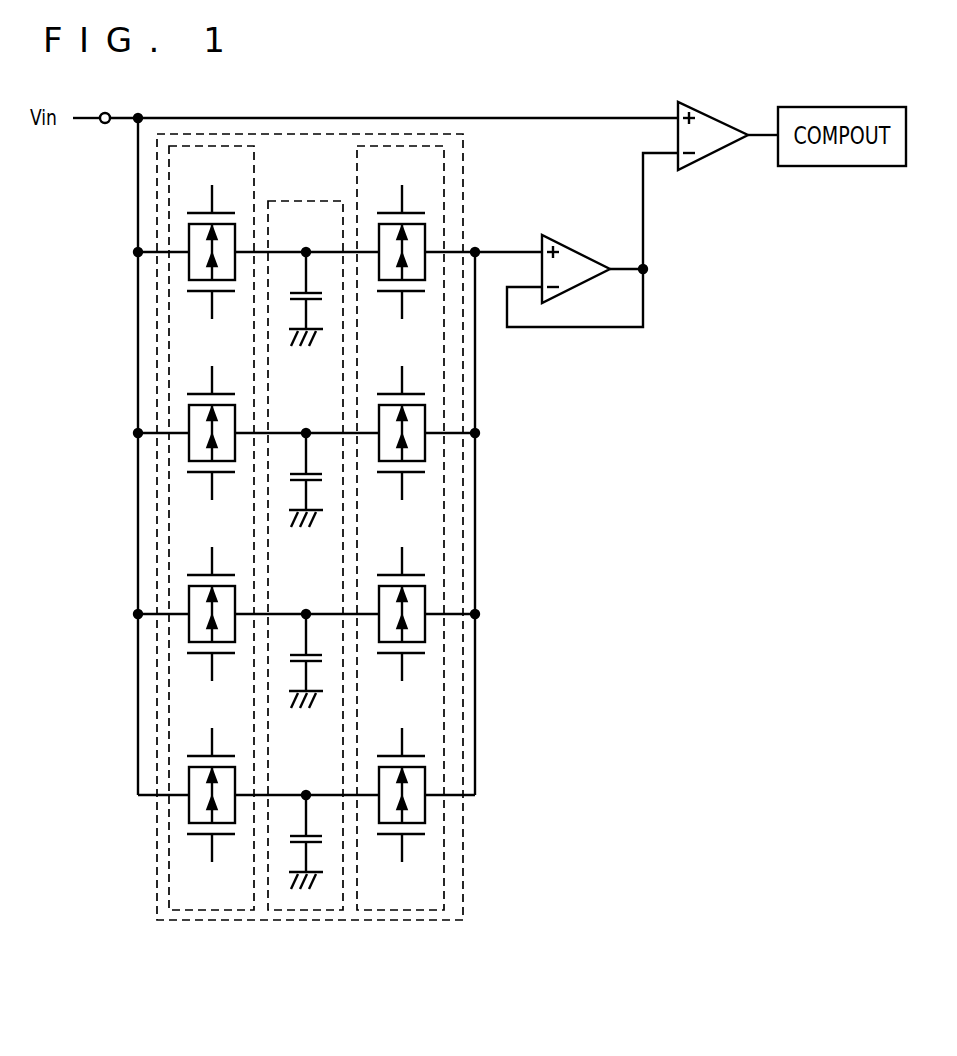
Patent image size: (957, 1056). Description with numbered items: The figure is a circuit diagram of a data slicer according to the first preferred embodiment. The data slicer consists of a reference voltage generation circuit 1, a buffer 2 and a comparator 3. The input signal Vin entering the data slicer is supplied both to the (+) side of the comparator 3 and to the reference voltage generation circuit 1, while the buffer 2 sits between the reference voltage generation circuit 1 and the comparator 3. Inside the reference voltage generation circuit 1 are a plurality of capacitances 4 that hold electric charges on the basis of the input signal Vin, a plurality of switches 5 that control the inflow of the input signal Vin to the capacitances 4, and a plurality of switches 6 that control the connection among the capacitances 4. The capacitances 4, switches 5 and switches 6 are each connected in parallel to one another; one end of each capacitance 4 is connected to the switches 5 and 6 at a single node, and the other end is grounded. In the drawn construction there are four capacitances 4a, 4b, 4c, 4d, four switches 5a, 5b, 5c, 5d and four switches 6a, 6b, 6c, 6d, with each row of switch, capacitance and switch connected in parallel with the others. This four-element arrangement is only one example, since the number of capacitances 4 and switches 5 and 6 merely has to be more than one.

The reference voltage generation circuit 1 is at (255, 921).
The buffer 2 is at (577, 263).
The comparator 3 is at (710, 167).
The capacitances 4 is at (302, 911).
The capacitance 4a is at (306, 284).
The capacitance 4b is at (306, 465).
The capacitance 4c is at (306, 646).
The capacitance 4d is at (306, 827).
The switches 5 is at (208, 921).
The switch 5a is at (208, 242).
The switch 5b is at (207, 423).
The switch 5c is at (208, 604).
The switch 5d is at (207, 785).
The switches 6 is at (398, 921).
The switch 6a is at (398, 242).
The switch 6b is at (397, 423).
The switch 6c is at (398, 604).
The switch 6d is at (397, 785).